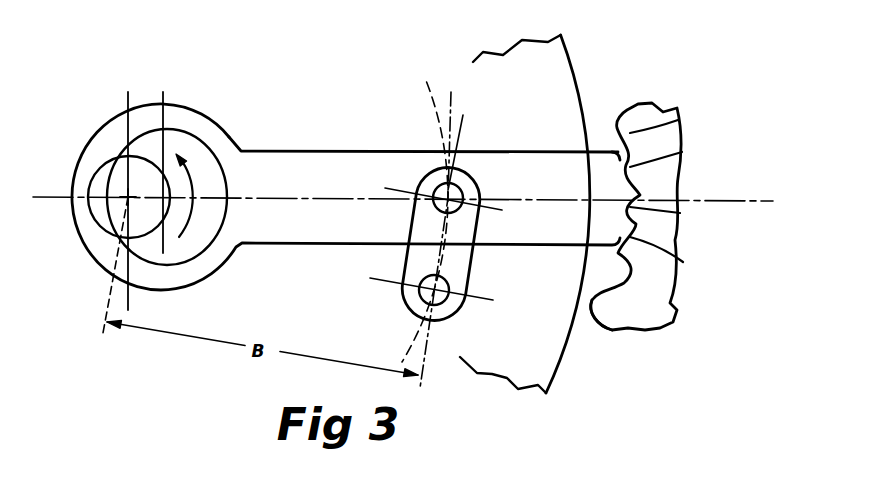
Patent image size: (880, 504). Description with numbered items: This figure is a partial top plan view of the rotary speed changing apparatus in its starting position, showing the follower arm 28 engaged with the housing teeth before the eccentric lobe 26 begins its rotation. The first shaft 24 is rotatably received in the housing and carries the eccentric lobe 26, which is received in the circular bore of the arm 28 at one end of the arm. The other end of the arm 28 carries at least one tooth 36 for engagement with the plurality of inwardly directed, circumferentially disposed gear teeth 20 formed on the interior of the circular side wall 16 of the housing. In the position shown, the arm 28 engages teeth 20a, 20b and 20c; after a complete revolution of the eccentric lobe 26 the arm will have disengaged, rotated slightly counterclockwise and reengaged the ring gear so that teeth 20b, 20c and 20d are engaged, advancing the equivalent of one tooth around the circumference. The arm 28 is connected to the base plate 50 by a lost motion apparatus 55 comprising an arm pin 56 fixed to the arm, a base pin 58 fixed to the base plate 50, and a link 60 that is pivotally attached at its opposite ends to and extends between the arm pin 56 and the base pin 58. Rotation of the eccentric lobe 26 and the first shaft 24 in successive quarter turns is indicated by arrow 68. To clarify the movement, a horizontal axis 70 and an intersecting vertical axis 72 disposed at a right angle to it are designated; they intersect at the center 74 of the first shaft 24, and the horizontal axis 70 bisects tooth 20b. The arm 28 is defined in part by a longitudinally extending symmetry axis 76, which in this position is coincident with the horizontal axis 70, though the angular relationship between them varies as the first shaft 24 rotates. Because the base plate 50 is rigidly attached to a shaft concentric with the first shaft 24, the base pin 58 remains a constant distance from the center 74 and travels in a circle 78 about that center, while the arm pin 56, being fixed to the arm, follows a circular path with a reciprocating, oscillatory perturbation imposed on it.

The side wall 16 is at (671, 111).
The gear teeth 20 is at (593, 320).
The tooth 20a is at (683, 264).
The tooth 20b is at (680, 214).
The tooth 20c is at (682, 152).
The tooth 20d is at (678, 121).
The first shaft 24 is at (97, 167).
The eccentric lobe 26 is at (187, 257).
The follower arm 28 is at (604, 150).
The tooth 36 is at (676, 180).
The base plate 50 is at (566, 53).
The lost motion apparatus 55 is at (405, 321).
The arm pin 56 is at (455, 183).
The base pin 58 is at (450, 314).
The link 60 is at (466, 266).
The arrow 68 is at (183, 160).
The horizontal axis 70 is at (768, 199).
The vertical axis 72 is at (128, 97).
The center 74 is at (128, 197).
The symmetry axis 76 is at (253, 197).
The circle 78 is at (426, 90).